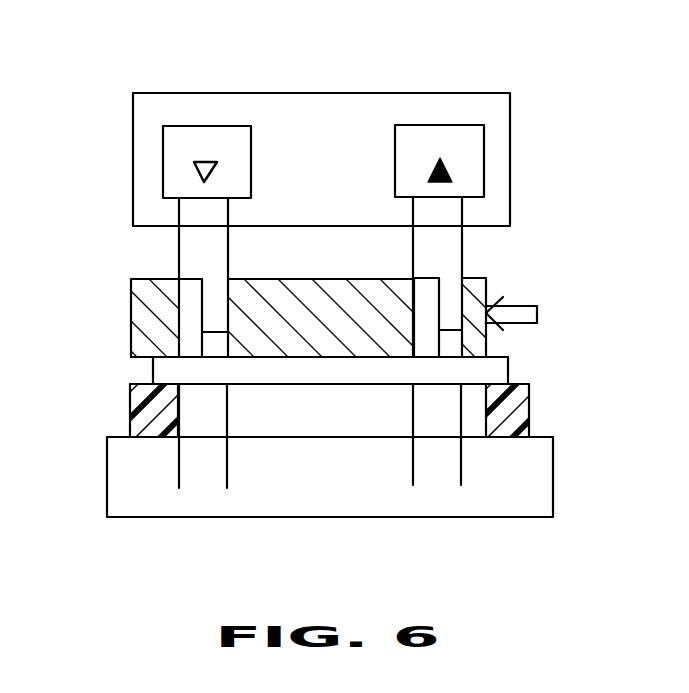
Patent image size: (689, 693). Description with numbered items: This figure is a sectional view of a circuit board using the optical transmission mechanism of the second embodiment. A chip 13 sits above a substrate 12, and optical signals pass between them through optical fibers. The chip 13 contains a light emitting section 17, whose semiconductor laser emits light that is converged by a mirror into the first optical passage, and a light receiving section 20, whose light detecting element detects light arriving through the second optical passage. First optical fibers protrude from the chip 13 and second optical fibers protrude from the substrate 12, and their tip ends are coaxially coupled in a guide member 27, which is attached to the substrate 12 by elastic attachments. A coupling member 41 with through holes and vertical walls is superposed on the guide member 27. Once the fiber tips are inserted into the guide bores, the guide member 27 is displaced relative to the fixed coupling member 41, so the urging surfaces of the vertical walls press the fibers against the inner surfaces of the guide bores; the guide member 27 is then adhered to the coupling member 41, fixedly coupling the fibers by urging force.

The substrate 12 is at (347, 507).
The chip 13 is at (336, 97).
The light emitting section 17 is at (251, 173).
The light receiving section 20 is at (395, 173).
The guide member 27 is at (131, 317).
The coupling member 41 is at (505, 368).